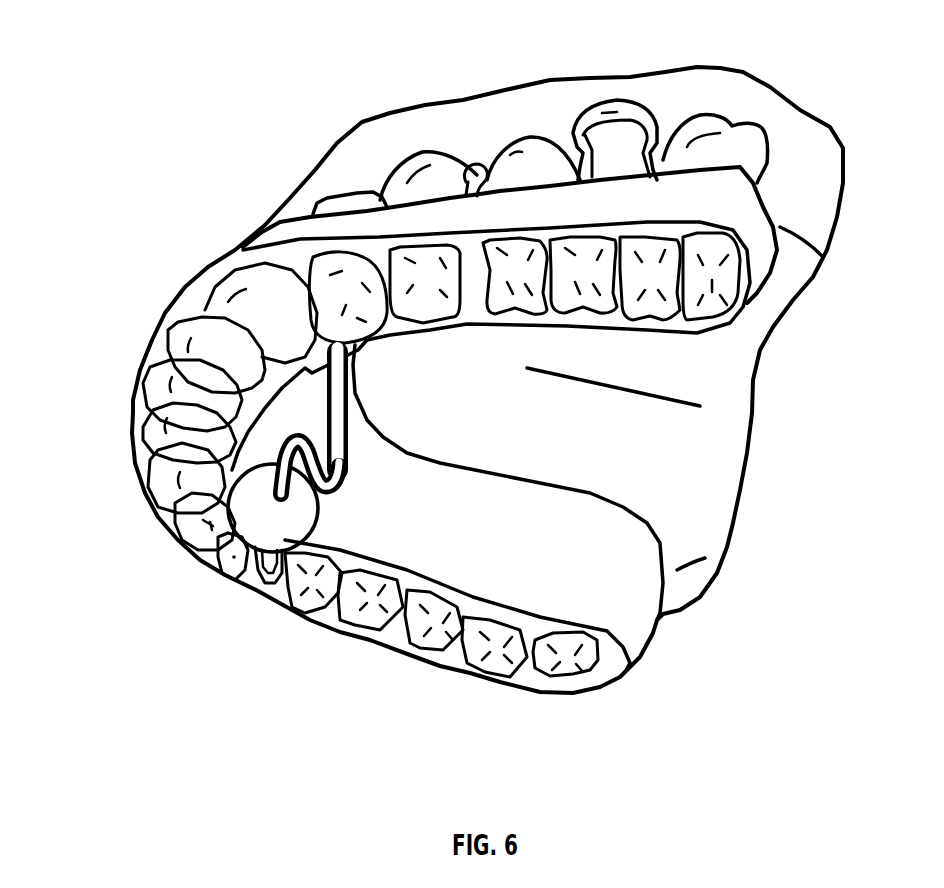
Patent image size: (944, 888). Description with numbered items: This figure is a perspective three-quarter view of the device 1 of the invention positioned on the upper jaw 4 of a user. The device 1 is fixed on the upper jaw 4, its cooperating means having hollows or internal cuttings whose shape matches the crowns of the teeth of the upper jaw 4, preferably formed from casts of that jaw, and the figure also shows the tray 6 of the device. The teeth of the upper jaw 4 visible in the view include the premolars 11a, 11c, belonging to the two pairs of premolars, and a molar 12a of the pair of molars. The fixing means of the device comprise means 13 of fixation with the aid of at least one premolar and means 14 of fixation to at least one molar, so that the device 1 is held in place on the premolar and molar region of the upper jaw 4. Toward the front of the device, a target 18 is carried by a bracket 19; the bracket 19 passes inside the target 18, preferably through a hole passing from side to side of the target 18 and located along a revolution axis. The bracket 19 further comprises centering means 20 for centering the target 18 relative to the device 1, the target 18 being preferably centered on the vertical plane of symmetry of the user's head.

The device 1 is at (667, 634).
The upper jaw 4 is at (367, 163).
The tray 6 is at (570, 667).
The premolar 11a is at (436, 155).
The premolar 11c is at (533, 157).
The molar 12a is at (622, 113).
The means of fixation with the aid of at least one premolar 13 is at (478, 150).
The means of fixation to at least one molar 14 is at (660, 120).
The target 18 is at (253, 513).
The bracket 19 is at (316, 399).
The centering means 20 is at (273, 445).